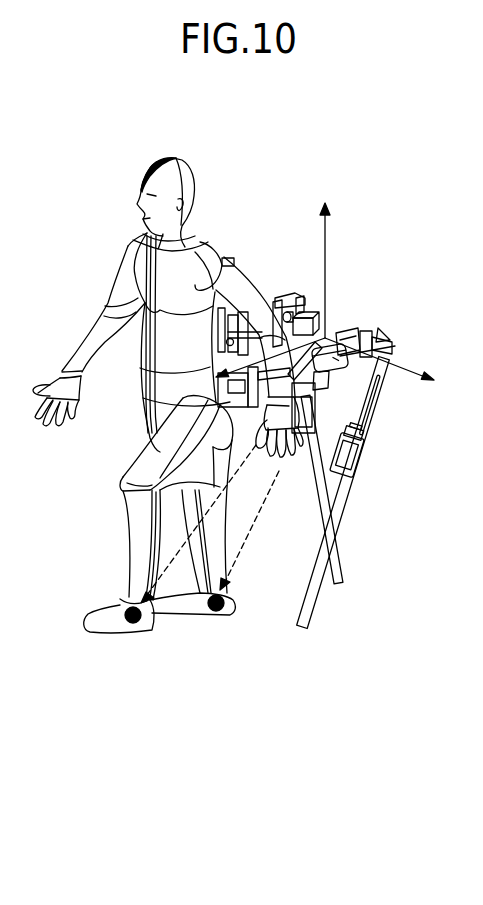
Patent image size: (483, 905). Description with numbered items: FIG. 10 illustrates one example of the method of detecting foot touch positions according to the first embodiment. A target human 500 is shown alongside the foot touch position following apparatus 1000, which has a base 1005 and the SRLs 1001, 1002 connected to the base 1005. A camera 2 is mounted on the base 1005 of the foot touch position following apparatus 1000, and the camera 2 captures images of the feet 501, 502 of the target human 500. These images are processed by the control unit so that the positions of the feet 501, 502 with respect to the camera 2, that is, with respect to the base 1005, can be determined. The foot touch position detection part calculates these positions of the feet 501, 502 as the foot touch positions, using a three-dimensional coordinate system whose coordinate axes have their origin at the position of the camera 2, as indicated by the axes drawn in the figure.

The target human 500 is at (212, 158).
The foot 501 is at (121, 633).
The foot 502 is at (203, 613).
The foot touch position following apparatus 1000 is at (347, 296).
The SRL 1001 is at (315, 616).
The SRL 1002 is at (343, 567).
The base 1005 is at (329, 386).
The camera 2 is at (341, 371).